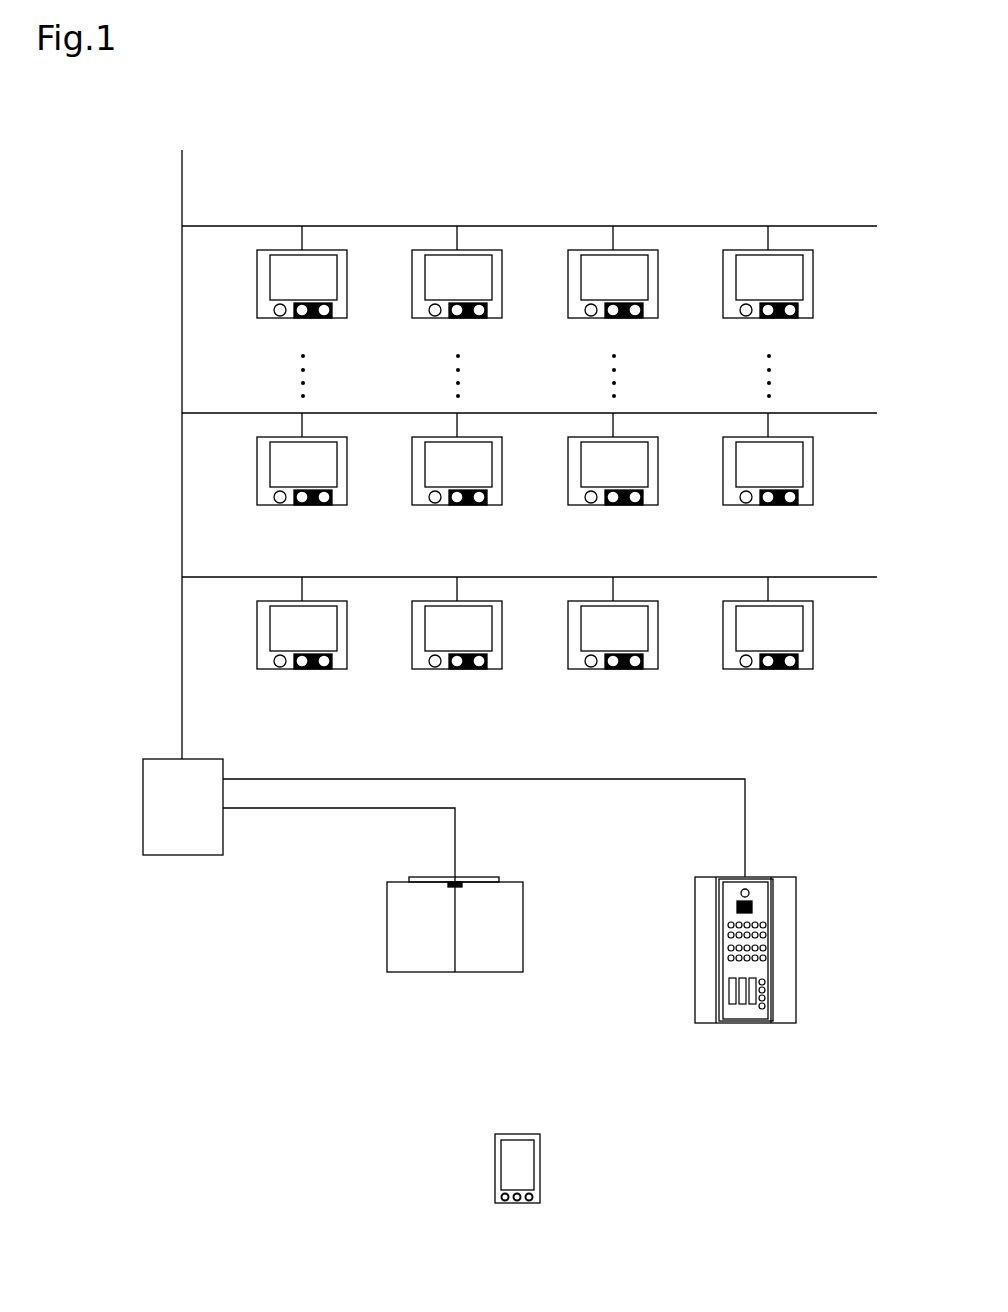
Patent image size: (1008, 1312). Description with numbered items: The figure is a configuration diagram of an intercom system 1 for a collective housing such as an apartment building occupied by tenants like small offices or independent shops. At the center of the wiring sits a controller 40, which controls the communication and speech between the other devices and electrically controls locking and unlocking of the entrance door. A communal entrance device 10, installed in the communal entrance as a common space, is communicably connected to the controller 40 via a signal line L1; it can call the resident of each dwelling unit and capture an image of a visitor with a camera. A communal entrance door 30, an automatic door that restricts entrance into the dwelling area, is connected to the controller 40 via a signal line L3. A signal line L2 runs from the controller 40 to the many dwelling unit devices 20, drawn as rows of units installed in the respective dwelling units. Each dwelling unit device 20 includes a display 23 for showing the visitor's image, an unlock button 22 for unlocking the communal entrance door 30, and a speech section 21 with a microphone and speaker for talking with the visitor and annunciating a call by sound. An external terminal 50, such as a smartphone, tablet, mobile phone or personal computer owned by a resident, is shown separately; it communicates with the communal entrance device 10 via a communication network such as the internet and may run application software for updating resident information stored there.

The intercom system 1 is at (558, 170).
The communal entrance device 10 is at (796, 943).
The dwelling unit device 20 is at (557, 447).
The speech section 21 is at (554, 509).
The unlock button 22 is at (497, 508).
The display 23 is at (511, 453).
The communal entrance door 30 is at (523, 928).
The controller 40 is at (172, 856).
The external terminal 50 is at (540, 1167).
The signal line L1 is at (606, 780).
The signal line L2 is at (182, 637).
The signal line L3 is at (283, 810).